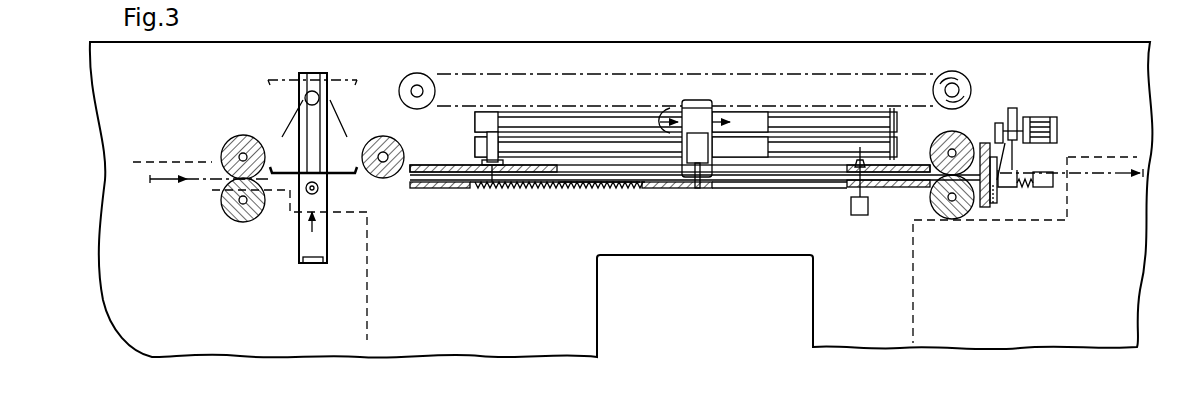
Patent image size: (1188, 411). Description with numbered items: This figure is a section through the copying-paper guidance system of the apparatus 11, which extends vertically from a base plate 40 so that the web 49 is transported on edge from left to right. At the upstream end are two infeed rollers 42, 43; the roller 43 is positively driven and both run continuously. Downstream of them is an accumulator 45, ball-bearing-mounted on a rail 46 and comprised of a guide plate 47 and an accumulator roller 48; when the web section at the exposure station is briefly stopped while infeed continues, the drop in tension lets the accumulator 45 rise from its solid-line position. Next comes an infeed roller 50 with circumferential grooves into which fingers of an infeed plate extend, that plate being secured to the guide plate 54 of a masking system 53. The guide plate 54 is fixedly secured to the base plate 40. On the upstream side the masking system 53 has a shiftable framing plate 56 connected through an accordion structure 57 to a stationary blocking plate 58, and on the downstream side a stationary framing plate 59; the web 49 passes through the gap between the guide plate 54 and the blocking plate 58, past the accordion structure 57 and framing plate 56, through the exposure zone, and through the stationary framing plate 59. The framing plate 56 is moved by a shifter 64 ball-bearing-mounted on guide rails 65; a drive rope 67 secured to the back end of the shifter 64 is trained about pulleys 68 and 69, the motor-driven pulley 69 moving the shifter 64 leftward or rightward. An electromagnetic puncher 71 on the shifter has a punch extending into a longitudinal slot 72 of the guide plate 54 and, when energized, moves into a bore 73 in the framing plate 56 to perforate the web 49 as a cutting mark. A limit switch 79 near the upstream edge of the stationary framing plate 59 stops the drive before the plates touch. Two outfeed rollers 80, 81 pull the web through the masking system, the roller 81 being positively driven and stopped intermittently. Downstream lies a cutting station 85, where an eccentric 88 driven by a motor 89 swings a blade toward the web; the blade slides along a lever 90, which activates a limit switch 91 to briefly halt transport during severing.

The conveyor belt 11 is at (753, 62).
The base plate 40 is at (492, 281).
The infeed roller 42 is at (243, 222).
The infeed roller 43 is at (233, 141).
The accumulator 45 is at (290, 162).
The rail 46 is at (312, 263).
The guide plate 47 is at (355, 170).
The accumulator roller 48 is at (320, 193).
The web 49 is at (157, 181).
The infeed roller 50 is at (384, 136).
The masking system 53 is at (548, 193).
The guide plate 54 is at (432, 165).
The shiftable framing plate 56 is at (667, 190).
The accordion structure 57 is at (608, 193).
The stationary blocking plate 58 is at (442, 189).
The stationary framing plate 59 is at (888, 188).
The shifter 64 is at (698, 105).
The guide rails 65 is at (896, 146).
The drive rope 67 is at (476, 111).
The pulley 68 is at (402, 88).
The pulley 69 is at (966, 78).
The electromagnetic puncher 71 is at (690, 147).
The longitudinal slot 72 is at (805, 162).
The bore 73 is at (700, 188).
The limit switch 79 is at (862, 215).
The outfeed roller 80 is at (965, 122).
The outfeed roller 81 is at (946, 220).
The cutting station 85 is at (998, 206).
The eccentric 88 is at (999, 123).
The motor 89 is at (1050, 100).
The lever 90 is at (1013, 164).
The limit switch 91 is at (1043, 188).